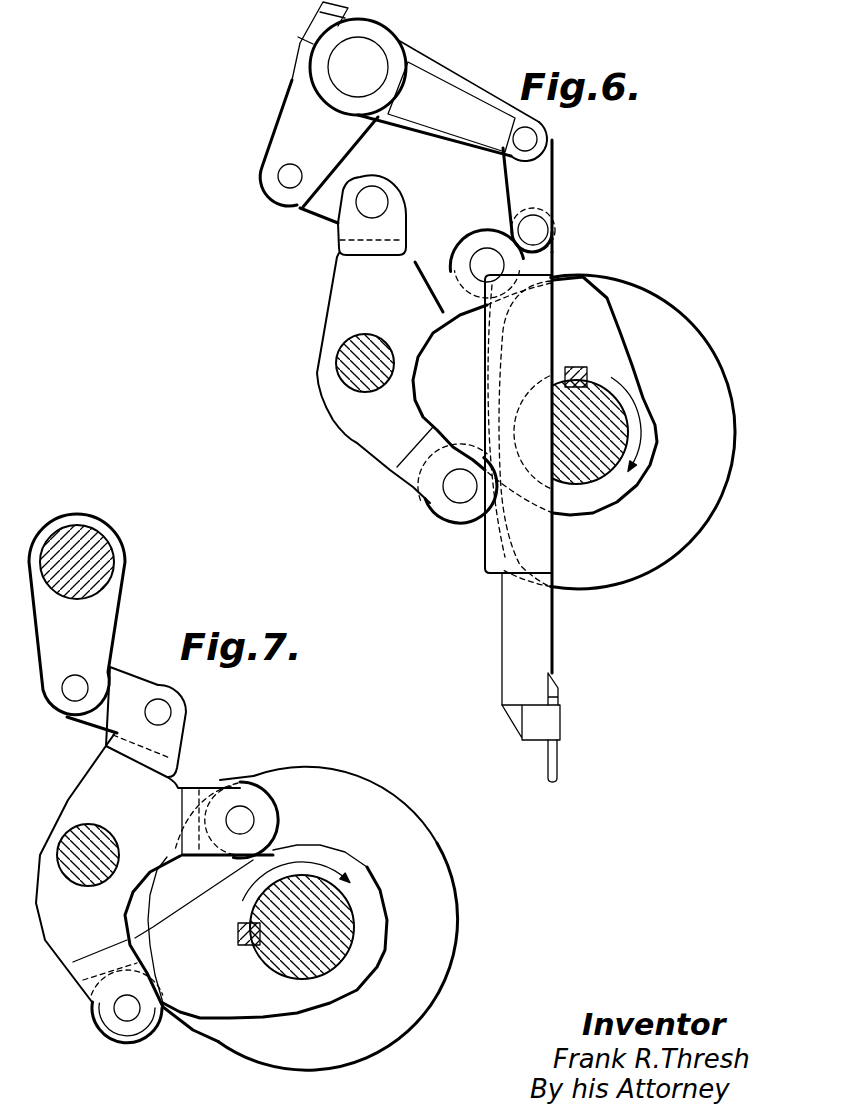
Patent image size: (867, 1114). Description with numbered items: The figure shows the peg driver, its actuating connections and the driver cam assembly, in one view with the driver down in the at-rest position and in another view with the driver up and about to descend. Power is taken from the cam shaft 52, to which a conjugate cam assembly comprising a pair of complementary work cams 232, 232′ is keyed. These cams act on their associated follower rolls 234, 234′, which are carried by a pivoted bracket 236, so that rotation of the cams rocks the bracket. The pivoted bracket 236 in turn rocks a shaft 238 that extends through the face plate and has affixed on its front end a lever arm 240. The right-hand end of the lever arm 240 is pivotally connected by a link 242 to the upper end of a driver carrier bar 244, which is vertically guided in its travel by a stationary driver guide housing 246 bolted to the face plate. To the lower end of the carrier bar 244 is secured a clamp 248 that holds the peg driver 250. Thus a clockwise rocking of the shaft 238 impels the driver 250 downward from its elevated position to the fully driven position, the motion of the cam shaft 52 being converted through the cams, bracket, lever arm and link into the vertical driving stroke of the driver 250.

In FIG. 6, the cam shaft 52 is at (607, 474).
In FIG. 7, the cam shaft 52 is at (350, 925).
In FIG. 6, the work cam 232 is at (718, 366).
In FIG. 7, the work cam 232 is at (460, 903).
In FIG. 6, the work cam 232′ is at (630, 347).
In FIG. 7, the work cam 232′ is at (368, 876).
In FIG. 6, the follower roll 234 is at (433, 507).
In FIG. 7, the follower roll 234 is at (143, 1043).
In FIG. 6, the follower roll 234′ is at (497, 222).
In FIG. 7, the follower roll 234′ is at (280, 813).
In FIG. 6, the pivoted bracket 236 is at (393, 311).
In FIG. 7, the pivoted bracket 236 is at (143, 821).
In FIG. 6, the shaft 238 is at (337, 62).
In FIG. 7, the shaft 238 is at (108, 555).
In FIG. 6, the lever arm 240 is at (462, 60).
In FIG. 6, the link 242 is at (547, 186).
In FIG. 6, the driver carrier bar 244 is at (548, 262).
In FIG. 6, the driver guide housing 246 is at (485, 562).
In FIG. 6, the clamp 248 is at (560, 725).
In FIG. 6, the peg driver 250 is at (557, 760).